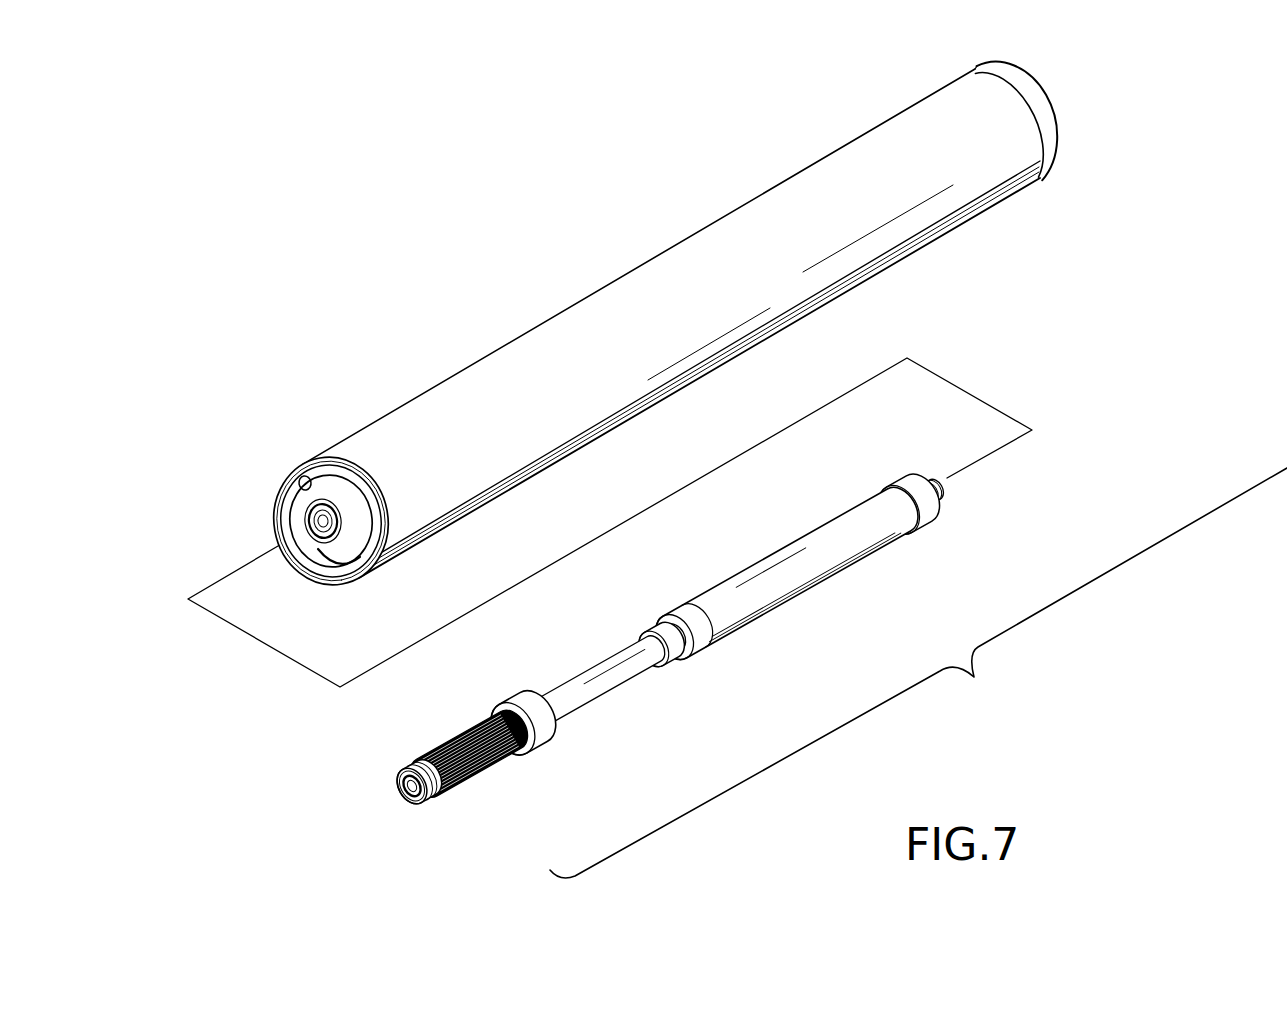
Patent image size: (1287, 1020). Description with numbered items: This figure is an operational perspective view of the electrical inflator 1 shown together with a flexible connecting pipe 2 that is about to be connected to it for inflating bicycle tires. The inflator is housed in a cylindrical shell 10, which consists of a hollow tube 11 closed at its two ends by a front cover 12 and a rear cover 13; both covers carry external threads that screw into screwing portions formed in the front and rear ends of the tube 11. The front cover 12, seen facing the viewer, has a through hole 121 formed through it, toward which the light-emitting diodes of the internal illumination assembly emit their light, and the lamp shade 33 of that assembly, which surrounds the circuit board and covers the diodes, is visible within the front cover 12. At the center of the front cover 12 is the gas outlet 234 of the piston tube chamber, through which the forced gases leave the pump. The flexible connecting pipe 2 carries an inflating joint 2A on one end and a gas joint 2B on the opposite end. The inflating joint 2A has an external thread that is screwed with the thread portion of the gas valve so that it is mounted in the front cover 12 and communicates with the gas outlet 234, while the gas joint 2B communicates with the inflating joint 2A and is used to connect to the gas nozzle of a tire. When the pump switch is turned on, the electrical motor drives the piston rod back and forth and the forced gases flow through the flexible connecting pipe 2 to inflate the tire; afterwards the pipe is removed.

The electrical inflator 1 is at (658, 344).
The cylindrical shell 10 is at (812, 163).
The tube 11 is at (613, 404).
The front cover 12 is at (303, 496).
The through hole 121 is at (305, 483).
The rear cover 13 is at (1048, 130).
The lamp shade 33 is at (327, 552).
The gas outlet 234 is at (305, 514).
The flexible connecting pipe 2 is at (714, 675).
The inflating joint 2A is at (945, 487).
The gas joint 2B is at (425, 803).